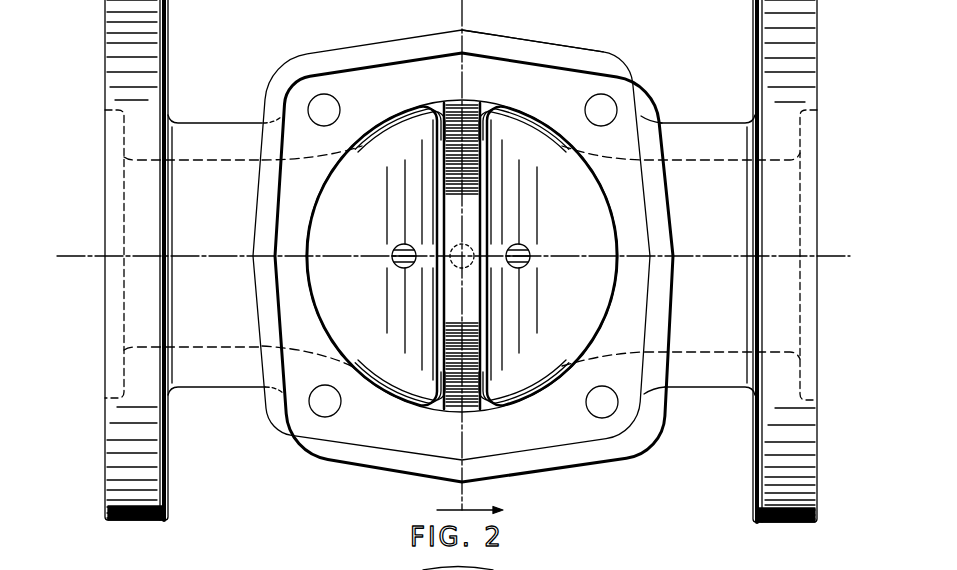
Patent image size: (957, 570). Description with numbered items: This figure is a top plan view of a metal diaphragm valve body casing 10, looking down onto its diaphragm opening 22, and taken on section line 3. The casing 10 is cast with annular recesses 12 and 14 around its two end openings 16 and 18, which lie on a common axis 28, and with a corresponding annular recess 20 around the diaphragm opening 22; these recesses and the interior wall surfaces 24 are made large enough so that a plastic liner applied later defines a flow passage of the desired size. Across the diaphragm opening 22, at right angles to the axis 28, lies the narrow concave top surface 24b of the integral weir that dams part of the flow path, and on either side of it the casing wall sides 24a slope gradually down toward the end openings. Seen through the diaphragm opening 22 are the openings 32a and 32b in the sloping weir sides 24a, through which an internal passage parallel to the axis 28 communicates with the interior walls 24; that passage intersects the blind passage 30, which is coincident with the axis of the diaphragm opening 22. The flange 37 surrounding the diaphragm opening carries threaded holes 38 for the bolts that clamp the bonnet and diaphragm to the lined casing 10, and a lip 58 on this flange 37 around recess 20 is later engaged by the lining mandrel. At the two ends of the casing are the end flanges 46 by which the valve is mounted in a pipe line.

The section line 3- 3 is at (461, 508).
The body casing 10 is at (705, 395).
The annular recess 12 is at (113, 130).
The annular recess 14 is at (806, 135).
The end opening 16 is at (123, 284).
The end opening 18 is at (787, 288).
The annular recess 20 is at (352, 83).
The diaphragm opening 22 is at (376, 139).
The interior wall surfaces 24 is at (509, 247).
The casing wall sides 24a is at (376, 256).
The concave top surface 24b is at (455, 180).
The common axis 28 is at (62, 256).
The passage 30 is at (467, 267).
The opening 32a is at (585, 250).
The opening 32b is at (395, 263).
The flange 37 is at (352, 470).
The holes 38 is at (594, 97).
The casing end flanges 46 is at (122, 50).
The lip 58 is at (512, 50).